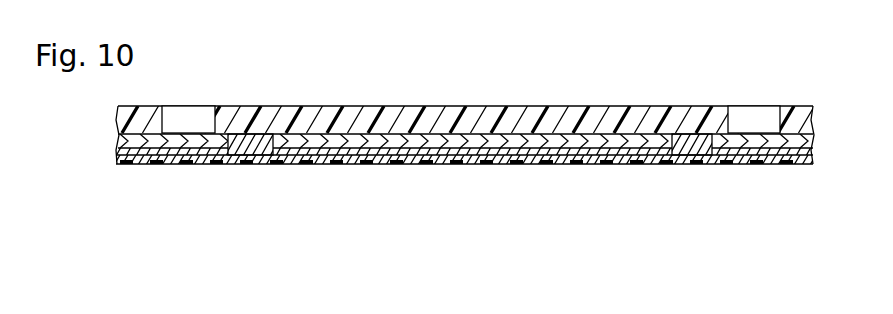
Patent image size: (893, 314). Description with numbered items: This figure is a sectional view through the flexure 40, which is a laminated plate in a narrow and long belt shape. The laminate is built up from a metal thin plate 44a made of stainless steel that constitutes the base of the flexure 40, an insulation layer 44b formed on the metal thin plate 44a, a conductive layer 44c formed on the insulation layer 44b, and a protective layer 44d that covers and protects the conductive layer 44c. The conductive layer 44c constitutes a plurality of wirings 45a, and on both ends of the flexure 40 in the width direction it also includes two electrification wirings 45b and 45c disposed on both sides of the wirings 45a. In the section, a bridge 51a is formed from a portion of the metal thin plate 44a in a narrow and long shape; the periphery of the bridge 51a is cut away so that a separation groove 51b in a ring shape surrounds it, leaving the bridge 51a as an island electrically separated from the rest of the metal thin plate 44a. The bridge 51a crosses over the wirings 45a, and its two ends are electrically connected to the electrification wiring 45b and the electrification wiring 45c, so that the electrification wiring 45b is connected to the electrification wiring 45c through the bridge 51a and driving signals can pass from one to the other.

The flexure 40 is at (295, 186).
The bridge 51a is at (445, 110).
The separation groove 51b is at (188, 110).
The metal thin plate 44a is at (701, 132).
The insulation layer 44b is at (607, 166).
The conductive layer 44c is at (722, 167).
The protective layer 44d is at (455, 166).
The wirings 45a is at (377, 166).
The electrification wiring 45b is at (678, 150).
The electrification wiring 45c is at (251, 147).